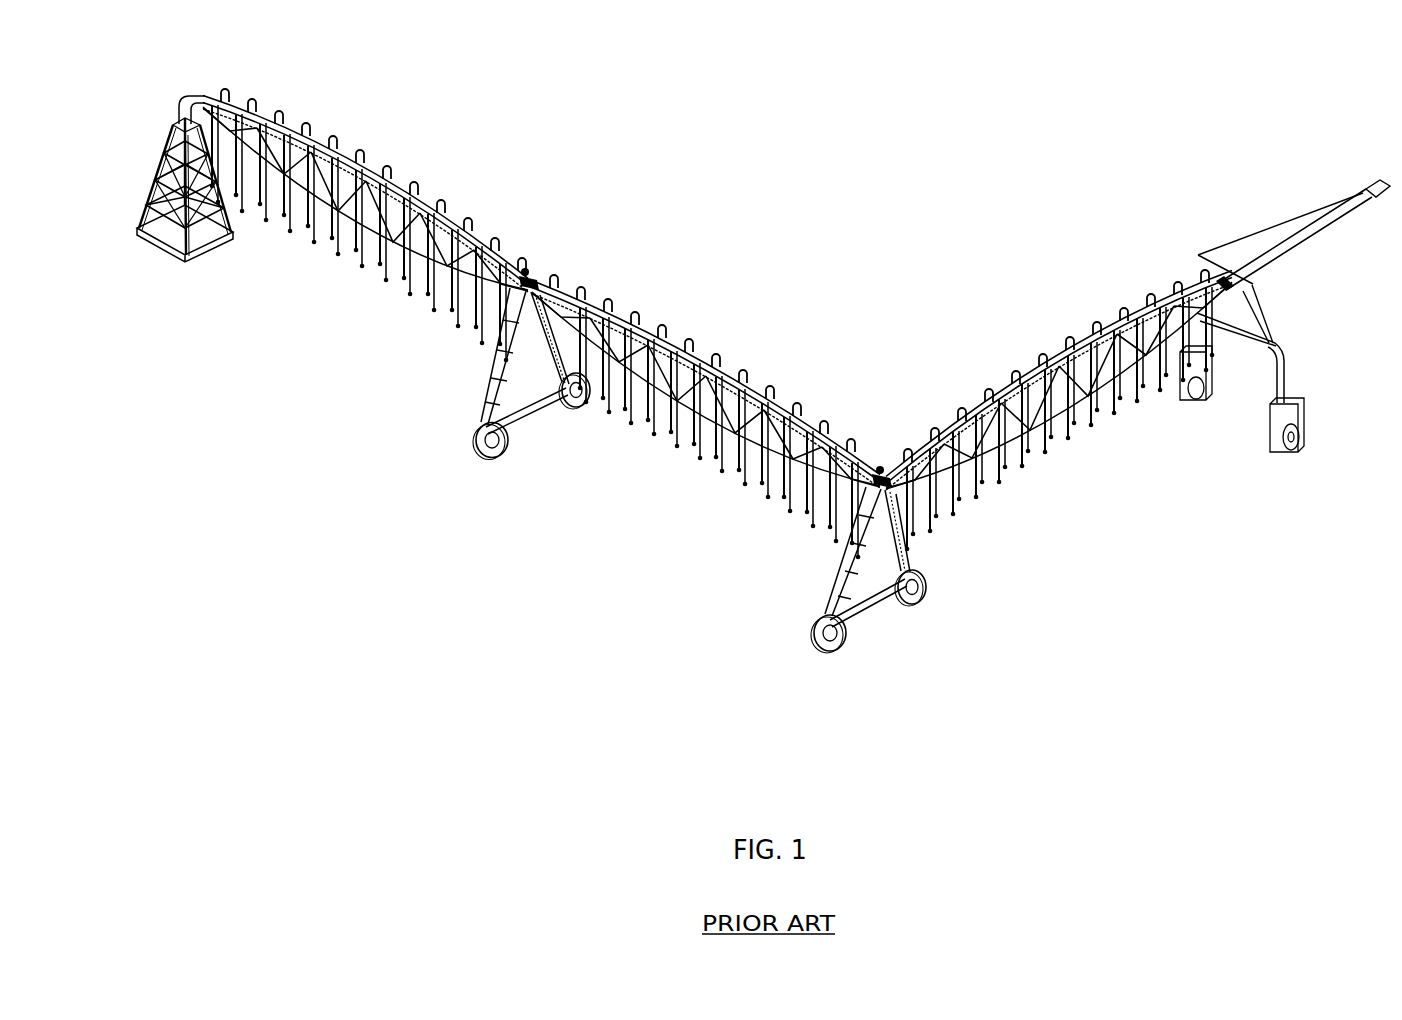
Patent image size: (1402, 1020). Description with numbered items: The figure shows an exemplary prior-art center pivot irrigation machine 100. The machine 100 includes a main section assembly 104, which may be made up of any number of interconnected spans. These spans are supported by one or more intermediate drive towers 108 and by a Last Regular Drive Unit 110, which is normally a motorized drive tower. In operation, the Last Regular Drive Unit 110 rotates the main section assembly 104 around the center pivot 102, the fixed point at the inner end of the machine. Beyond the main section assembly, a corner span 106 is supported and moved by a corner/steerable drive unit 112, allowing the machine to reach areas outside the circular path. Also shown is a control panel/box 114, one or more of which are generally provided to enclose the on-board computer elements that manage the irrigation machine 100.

The irrigation machine 100 is at (806, 55).
The center pivot 102 is at (172, 130).
The main section assembly 104 is at (603, 233).
The corner span 106 is at (949, 323).
The intermediate drive tower 108 is at (485, 414).
The Last Regular Drive Unit (LRDU) 110 is at (830, 592).
The corner/steerable drive unit (SDU) 112 is at (1277, 345).
The control panel/box 114 is at (170, 204).